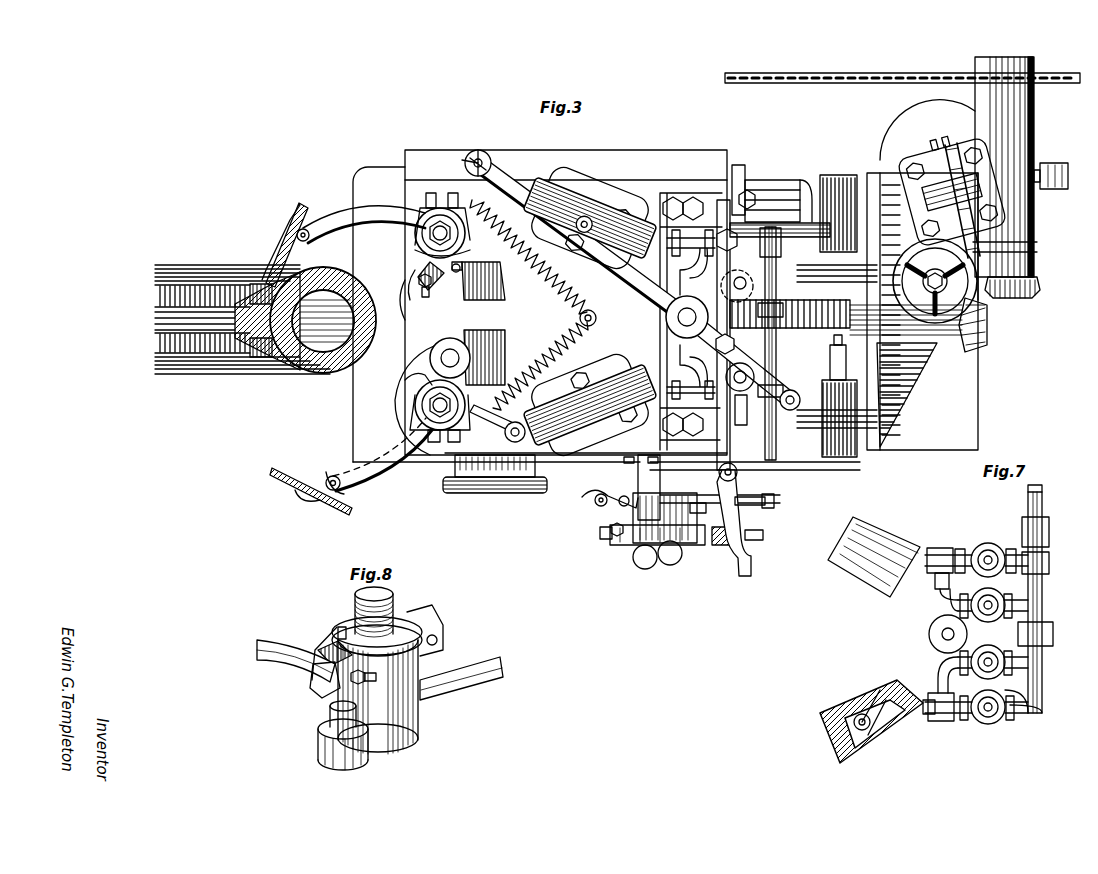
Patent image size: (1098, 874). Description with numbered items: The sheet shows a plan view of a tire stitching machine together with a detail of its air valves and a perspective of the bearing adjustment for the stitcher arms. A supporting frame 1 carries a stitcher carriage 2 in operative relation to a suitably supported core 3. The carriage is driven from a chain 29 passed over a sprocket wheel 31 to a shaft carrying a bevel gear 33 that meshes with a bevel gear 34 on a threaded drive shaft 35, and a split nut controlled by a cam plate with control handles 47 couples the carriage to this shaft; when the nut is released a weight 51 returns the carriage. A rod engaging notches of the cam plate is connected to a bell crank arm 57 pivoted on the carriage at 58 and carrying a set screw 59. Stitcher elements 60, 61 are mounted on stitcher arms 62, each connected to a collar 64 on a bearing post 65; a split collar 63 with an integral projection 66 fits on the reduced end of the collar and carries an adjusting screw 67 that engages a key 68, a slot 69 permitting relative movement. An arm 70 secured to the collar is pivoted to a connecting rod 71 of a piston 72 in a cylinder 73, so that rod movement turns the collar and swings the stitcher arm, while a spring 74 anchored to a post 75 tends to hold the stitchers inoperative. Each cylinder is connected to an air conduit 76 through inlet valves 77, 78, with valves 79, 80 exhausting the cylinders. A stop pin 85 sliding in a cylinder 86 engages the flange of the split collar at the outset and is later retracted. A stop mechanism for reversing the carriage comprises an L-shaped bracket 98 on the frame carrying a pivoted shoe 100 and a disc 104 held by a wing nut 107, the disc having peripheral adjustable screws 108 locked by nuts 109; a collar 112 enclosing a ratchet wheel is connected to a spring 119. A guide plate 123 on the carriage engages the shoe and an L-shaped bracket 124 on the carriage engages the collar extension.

In FIG. 3, the supporting frame 1 is at (365, 183).
In FIG. 3, the stitcher carriage 2 is at (648, 190).
In FIG. 3, the core 3 is at (256, 335).
In FIG. 3, the chain 29 is at (870, 72).
In FIG. 3, the sprocket wheel 31 is at (1037, 57).
In FIG. 3, the bevel gear 33 is at (1015, 298).
In FIG. 3, the bevel gear 34 is at (987, 340).
In FIG. 3, the threaded drive shaft 35 is at (832, 328).
In FIG. 3, the control handle 47 is at (790, 390).
In FIG. 3, the weight 51 is at (900, 132).
In FIG. 3, the bell crank arm 57 is at (745, 560).
In FIG. 3, the pivot 58 is at (740, 476).
In FIG. 3, the set screw 59 is at (725, 546).
In FIG. 3, the stitcher element 60 is at (296, 493).
In FIG. 3, the stitcher element 61 is at (285, 222).
In FIG. 8, the stitcher element 61 is at (275, 664).
In FIG. 3, the stitcher arm 62 is at (368, 215).
In FIG. 3, the split collar 63 is at (452, 195).
In FIG. 8, the split collar 63 is at (422, 660).
In FIG. 8, the collar 64 is at (425, 703).
In FIG. 3, the bearing member or post 65 is at (456, 240).
In FIG. 8, the bearing member or post 65 is at (386, 596).
In FIG. 3, the projection 66 is at (418, 283).
In FIG. 8, the projection 66 is at (320, 690).
In FIG. 3, the adjusting screw 67 is at (428, 298).
In FIG. 8, the adjusting screw 67 is at (378, 680).
In FIG. 8, the key 68 is at (328, 645).
In FIG. 8, the slot 69 is at (343, 627).
In FIG. 3, the arm 70 is at (478, 195).
In FIG. 8, the arm 70 is at (497, 660).
In FIG. 3, the connecting rod 71 is at (518, 185).
In FIG. 7, the connecting rod 71 is at (825, 735).
In FIG. 7, the piston 72 is at (862, 712).
In FIG. 3, the cylinder 73 is at (640, 220).
In FIG. 7, the cylinder 73 is at (880, 535).
In FIG. 3, the spring 74 is at (548, 292).
In FIG. 3, the post 75 is at (597, 318).
In FIG. 3, the air conduit 76 is at (780, 283).
In FIG. 7, the air conduit 76 is at (1043, 604).
In FIG. 7, the inlet valve 77 is at (992, 545).
In FIG. 7, the inlet valve 78 is at (990, 722).
In FIG. 7, the exhaust valve 79 is at (999, 670).
In FIG. 7, the exhaust valve 80 is at (990, 620).
In FIG. 3, the stop pin 85 is at (465, 267).
In FIG. 8, the stop pin 85 is at (332, 720).
In FIG. 3, the cylinder 86 is at (466, 281).
In FIG. 8, the cylinder 86 is at (340, 765).
In FIG. 3, the bracket 98 is at (640, 520).
In FIG. 3, the shoe 100 is at (595, 500).
In FIG. 3, the disc 104 is at (676, 548).
In FIG. 3, the wing nut 107 is at (645, 570).
In FIG. 3, the adjustable screw 108 is at (613, 538).
In FIG. 3, the nut 109 is at (606, 545).
In FIG. 3, the collar 112 is at (690, 508).
In FIG. 3, the spring 119 is at (770, 492).
In FIG. 3, the guide plate 123 is at (479, 495).
In FIG. 3, the bracket 124 is at (636, 470).